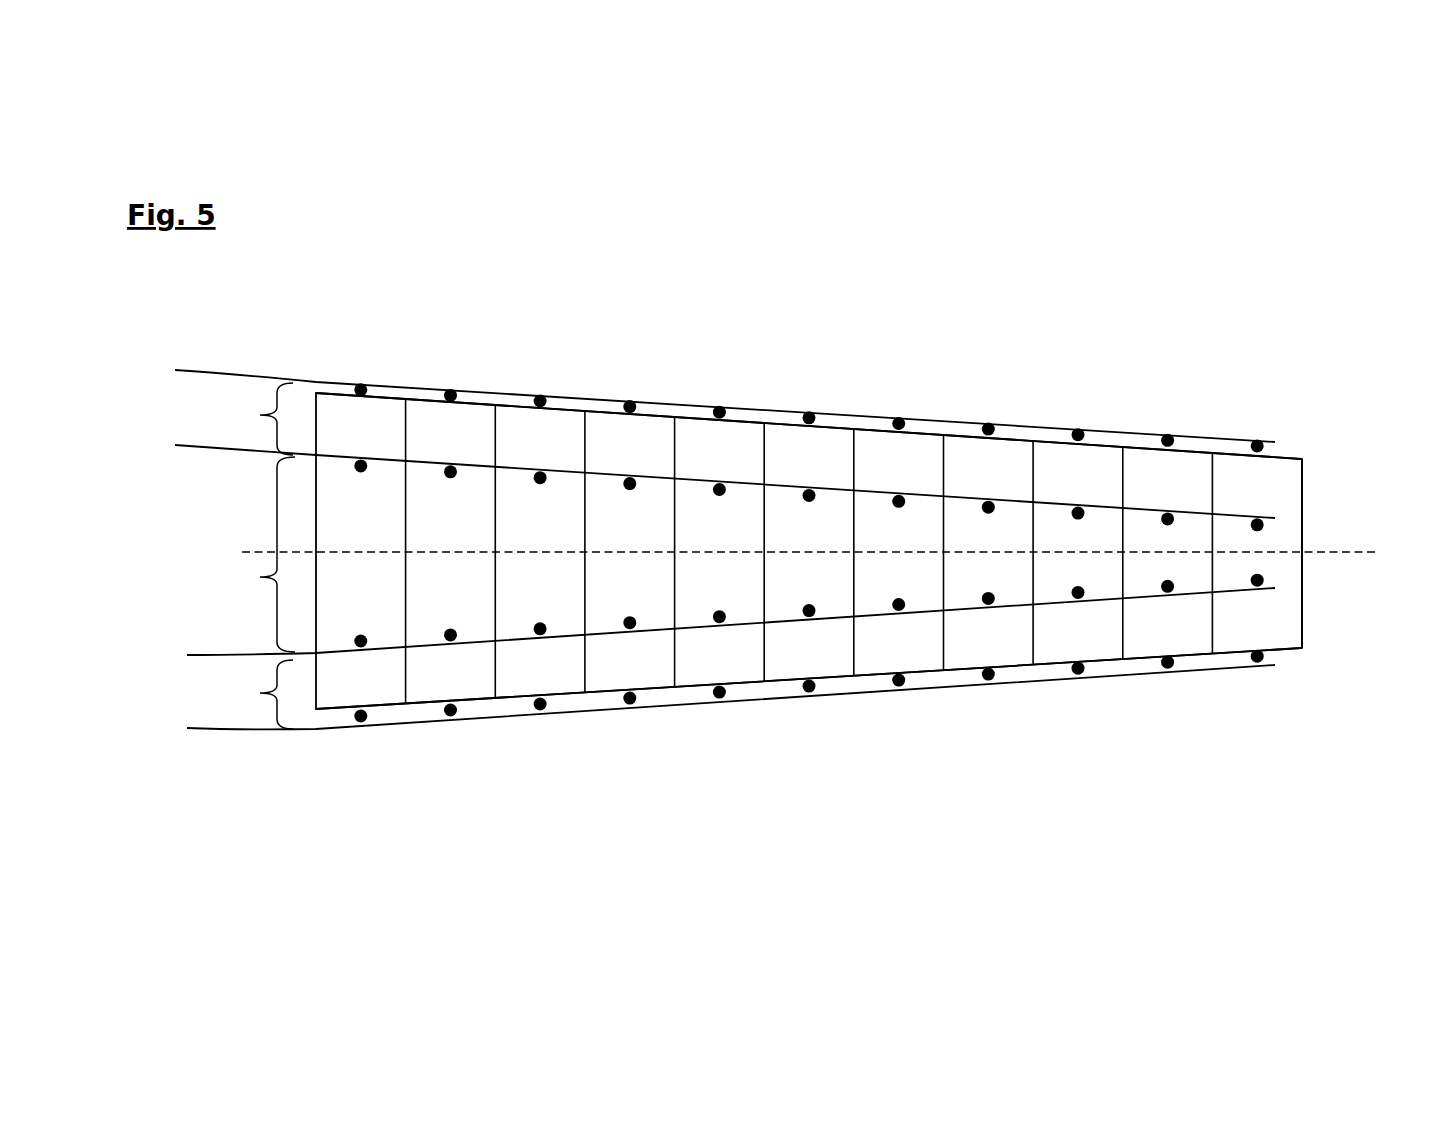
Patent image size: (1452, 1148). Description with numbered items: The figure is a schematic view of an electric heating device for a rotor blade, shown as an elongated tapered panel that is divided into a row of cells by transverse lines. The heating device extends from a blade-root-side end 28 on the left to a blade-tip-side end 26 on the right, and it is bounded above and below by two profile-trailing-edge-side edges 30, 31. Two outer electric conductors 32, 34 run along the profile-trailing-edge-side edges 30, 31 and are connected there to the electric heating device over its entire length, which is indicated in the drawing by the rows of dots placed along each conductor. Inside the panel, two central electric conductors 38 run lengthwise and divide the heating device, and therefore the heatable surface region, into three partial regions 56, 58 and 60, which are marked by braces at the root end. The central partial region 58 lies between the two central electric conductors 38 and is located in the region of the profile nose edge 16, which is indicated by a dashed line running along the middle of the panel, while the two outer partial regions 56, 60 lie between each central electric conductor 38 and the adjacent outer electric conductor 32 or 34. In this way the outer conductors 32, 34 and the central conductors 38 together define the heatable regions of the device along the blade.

The profile nose edge 16 is at (1350, 553).
The blade-tip-side end 26 is at (1302, 495).
The blade-root-side end 28 is at (316, 433).
The profile-trailing-edge-side edge 30 is at (597, 407).
The profile-trailing-edge-side edge 31 is at (592, 695).
The outer electric conductor 32 is at (703, 400).
The outer electric conductor 34 is at (708, 706).
The central electric conductor 38 is at (703, 555).
The partial region 56 is at (253, 419).
The central partial region 58 is at (255, 554).
The partial region 60 is at (255, 694).